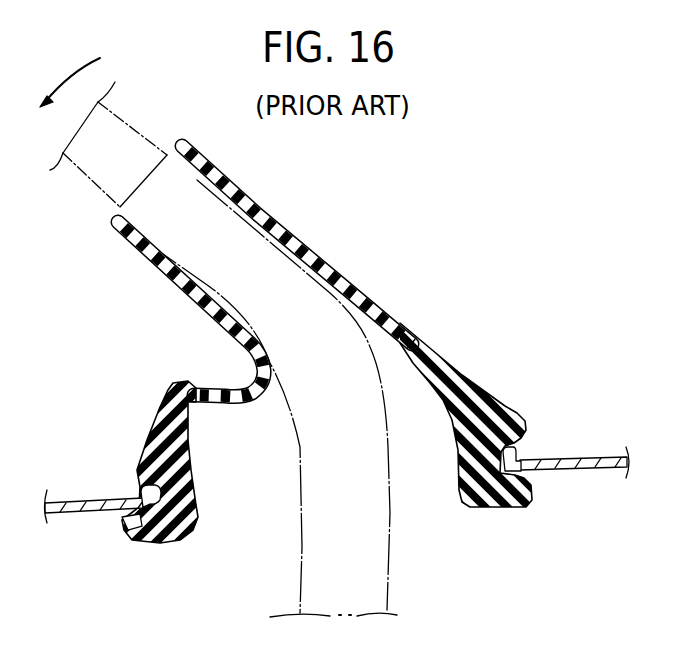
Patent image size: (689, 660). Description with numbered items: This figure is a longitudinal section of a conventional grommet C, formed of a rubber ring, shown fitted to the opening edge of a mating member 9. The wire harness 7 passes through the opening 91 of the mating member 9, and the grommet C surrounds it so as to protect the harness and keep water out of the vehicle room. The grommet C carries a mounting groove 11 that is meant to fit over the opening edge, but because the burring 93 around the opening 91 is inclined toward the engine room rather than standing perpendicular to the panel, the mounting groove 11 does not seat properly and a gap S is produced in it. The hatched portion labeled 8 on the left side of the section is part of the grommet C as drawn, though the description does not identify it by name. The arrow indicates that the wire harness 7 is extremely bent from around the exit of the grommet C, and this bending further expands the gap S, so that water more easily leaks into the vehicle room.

The wire harness 7 is at (147, 137).
The grommet C is at (338, 256).
The pillar flange 8 is at (200, 380).
The mating member 9 is at (65, 502).
The gap S is at (117, 517).
The mounting groove 11 is at (148, 530).
The opening 91 is at (257, 497).
The burring 93 is at (163, 540).